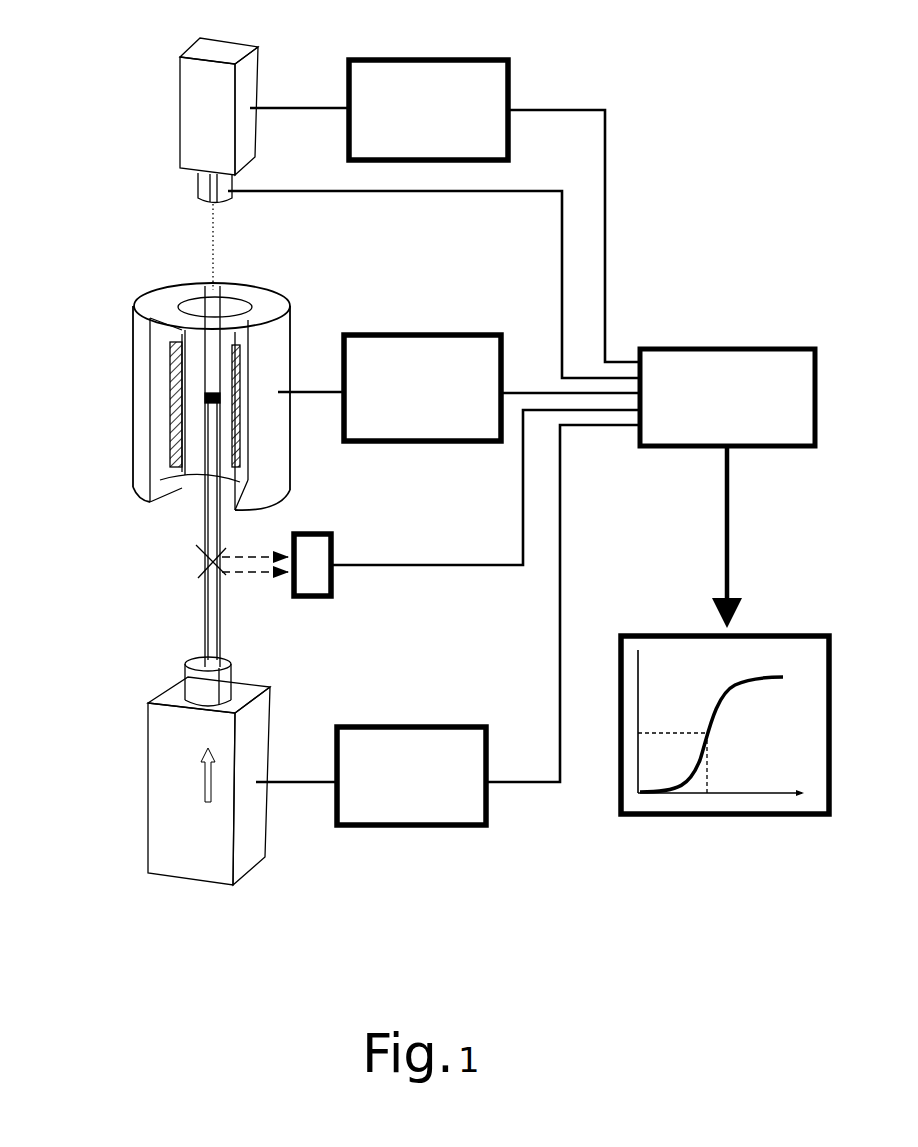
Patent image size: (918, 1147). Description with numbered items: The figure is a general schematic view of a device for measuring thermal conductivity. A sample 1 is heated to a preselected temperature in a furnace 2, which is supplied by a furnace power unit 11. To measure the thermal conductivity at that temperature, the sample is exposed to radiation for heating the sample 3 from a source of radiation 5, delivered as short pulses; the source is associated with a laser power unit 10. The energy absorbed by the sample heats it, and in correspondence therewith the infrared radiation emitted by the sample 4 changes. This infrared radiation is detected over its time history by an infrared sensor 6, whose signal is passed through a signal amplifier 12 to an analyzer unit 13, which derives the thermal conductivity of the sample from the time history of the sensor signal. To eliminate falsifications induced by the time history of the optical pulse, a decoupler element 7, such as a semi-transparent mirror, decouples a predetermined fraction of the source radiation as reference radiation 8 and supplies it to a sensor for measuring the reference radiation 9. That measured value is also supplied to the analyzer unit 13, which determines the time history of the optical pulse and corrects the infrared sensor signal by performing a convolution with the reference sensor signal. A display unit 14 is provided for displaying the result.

The sample 1 is at (200, 400).
The furnace 2 is at (163, 338).
The radiation for heating the sample 3 is at (193, 628).
The infrared radiation emitted by the sample 4 is at (212, 258).
The source of radiation 5 is at (192, 853).
The infrared sensor 6 is at (207, 92).
The decoupler element 7 is at (202, 555).
The reference radiation 8 is at (258, 583).
The sensor for measuring the reference radiation 9 is at (347, 588).
The laser power unit 10 is at (422, 793).
The furnace power unit 11 is at (432, 365).
The signal amplifier 12 is at (435, 95).
The analyzer unit 13 is at (730, 373).
The display unit 14 is at (748, 758).